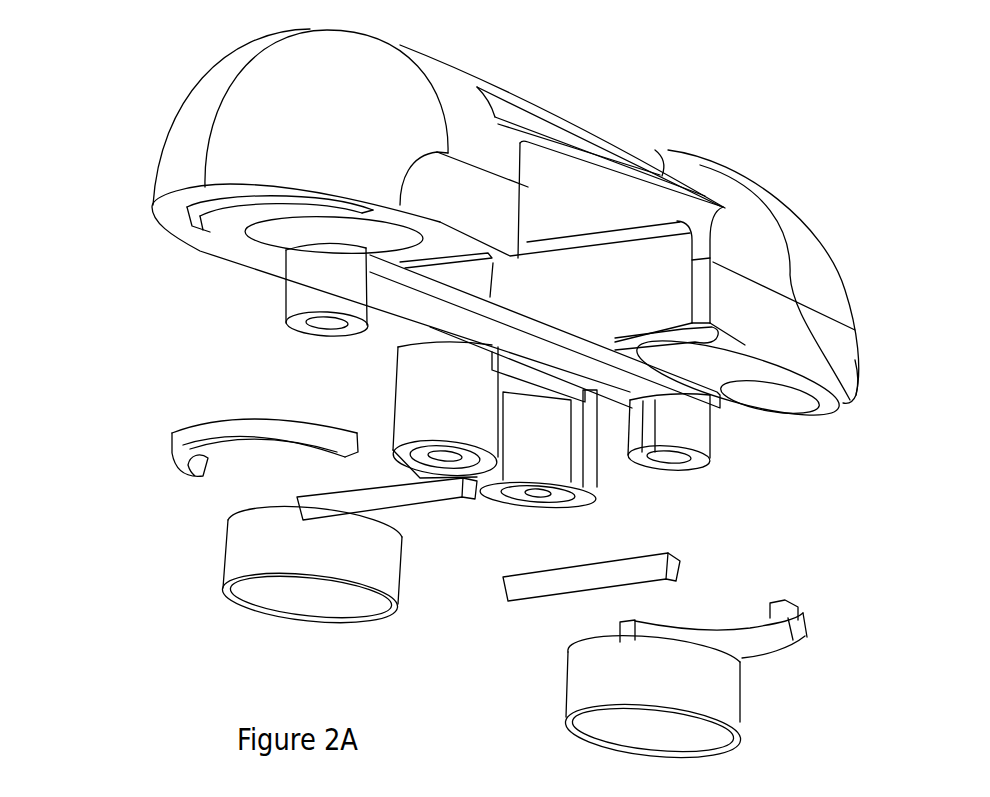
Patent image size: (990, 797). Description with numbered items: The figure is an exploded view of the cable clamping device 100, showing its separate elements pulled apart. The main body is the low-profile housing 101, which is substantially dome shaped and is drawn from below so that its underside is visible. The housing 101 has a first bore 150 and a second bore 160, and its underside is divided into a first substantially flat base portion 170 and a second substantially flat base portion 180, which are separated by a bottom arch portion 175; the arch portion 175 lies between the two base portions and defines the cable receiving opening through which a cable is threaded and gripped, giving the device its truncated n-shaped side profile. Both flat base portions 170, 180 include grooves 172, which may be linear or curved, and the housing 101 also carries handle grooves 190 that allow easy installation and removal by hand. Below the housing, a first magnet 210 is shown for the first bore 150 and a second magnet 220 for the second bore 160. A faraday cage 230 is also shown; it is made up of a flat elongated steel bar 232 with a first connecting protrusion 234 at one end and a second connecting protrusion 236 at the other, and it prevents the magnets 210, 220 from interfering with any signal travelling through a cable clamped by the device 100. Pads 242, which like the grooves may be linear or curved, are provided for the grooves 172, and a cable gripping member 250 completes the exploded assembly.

The cable clamping device 100 is at (468, 39).
The low-profile housing 101 is at (289, 116).
The handle grooves 190 is at (553, 132).
The bottom arch portion 175 is at (600, 206).
The first substantially flat base portion 170 is at (226, 213).
The grooves 172 is at (748, 370).
The second bore 160 is at (775, 385).
The first bore 150 is at (262, 240).
The second substantially flat base portion 180 is at (852, 398).
The first connecting protrusion 234 is at (300, 298).
The second connecting protrusion 236 is at (690, 423).
The faraday cage 230 is at (412, 314).
The flat elongated steel bar 232 is at (537, 330).
The cable gripping member 250 is at (545, 455).
The pads 242 is at (197, 431).
The first magnet 210 is at (293, 600).
The second magnet 220 is at (688, 688).